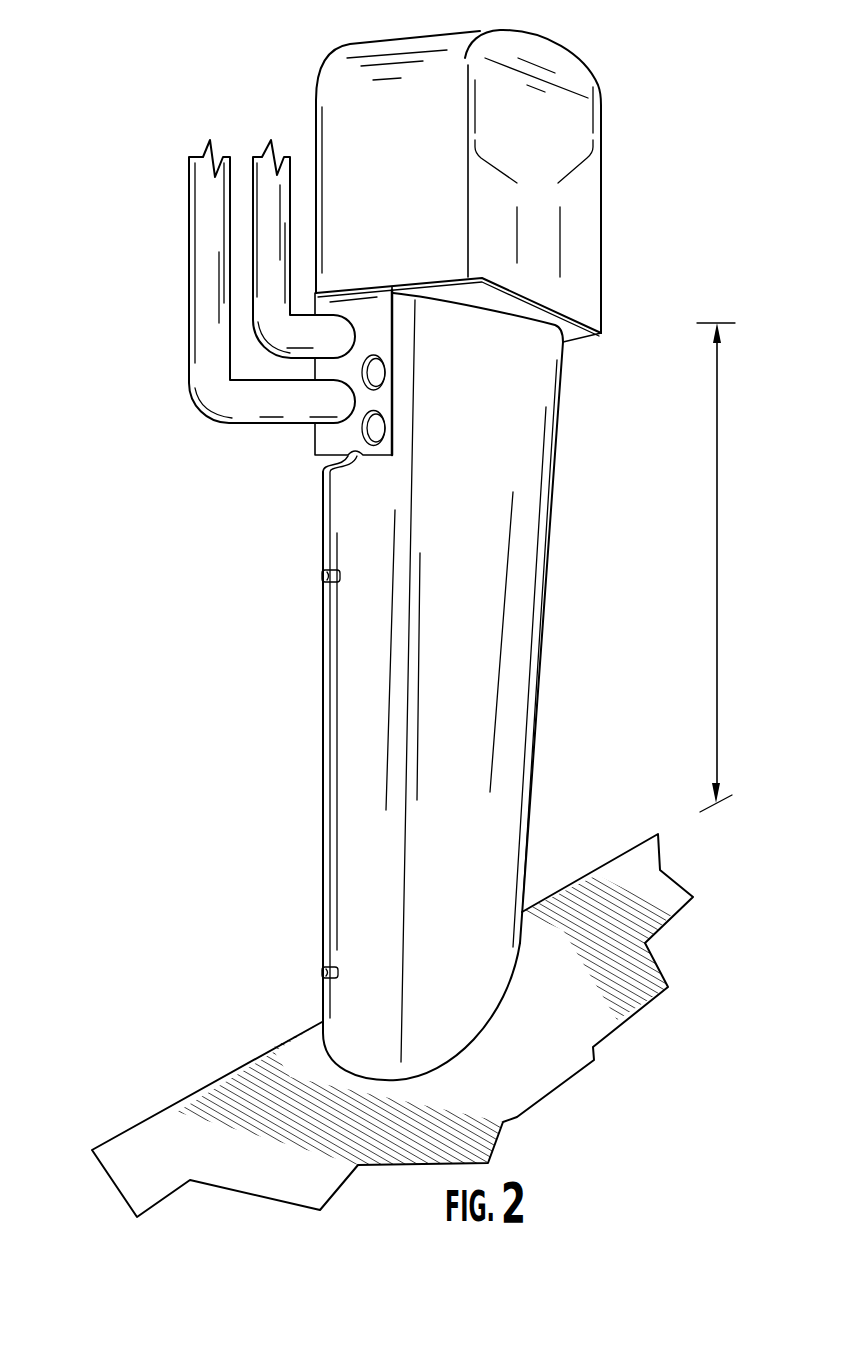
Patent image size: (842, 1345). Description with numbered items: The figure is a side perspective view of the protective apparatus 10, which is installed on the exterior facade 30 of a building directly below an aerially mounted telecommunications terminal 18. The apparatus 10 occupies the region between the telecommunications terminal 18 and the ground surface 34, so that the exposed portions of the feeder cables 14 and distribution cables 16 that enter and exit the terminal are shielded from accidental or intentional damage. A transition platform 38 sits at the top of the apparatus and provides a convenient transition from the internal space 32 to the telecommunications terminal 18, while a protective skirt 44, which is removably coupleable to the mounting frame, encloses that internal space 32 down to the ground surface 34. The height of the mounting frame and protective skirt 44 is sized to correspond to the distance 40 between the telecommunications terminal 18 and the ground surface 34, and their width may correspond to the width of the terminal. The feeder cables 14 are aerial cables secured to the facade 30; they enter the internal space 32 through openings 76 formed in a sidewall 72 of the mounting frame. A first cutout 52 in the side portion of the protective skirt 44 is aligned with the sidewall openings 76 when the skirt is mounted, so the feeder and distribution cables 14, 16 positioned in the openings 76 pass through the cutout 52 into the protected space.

The protective apparatus 10 is at (141, 350).
The feeder cables 14 is at (241, 428).
The distribution cables 16 is at (247, 222).
The telecommunications terminal 18 is at (604, 257).
The facade 30 is at (278, 701).
The internal space 32 is at (482, 807).
The ground surface 34 is at (627, 853).
The transition platform 38 is at (601, 333).
The distance 40 is at (717, 532).
The protective skirt 44 is at (545, 607).
The first cutout 52 is at (328, 468).
The sidewall 72 is at (315, 438).
The openings 76 is at (357, 398).